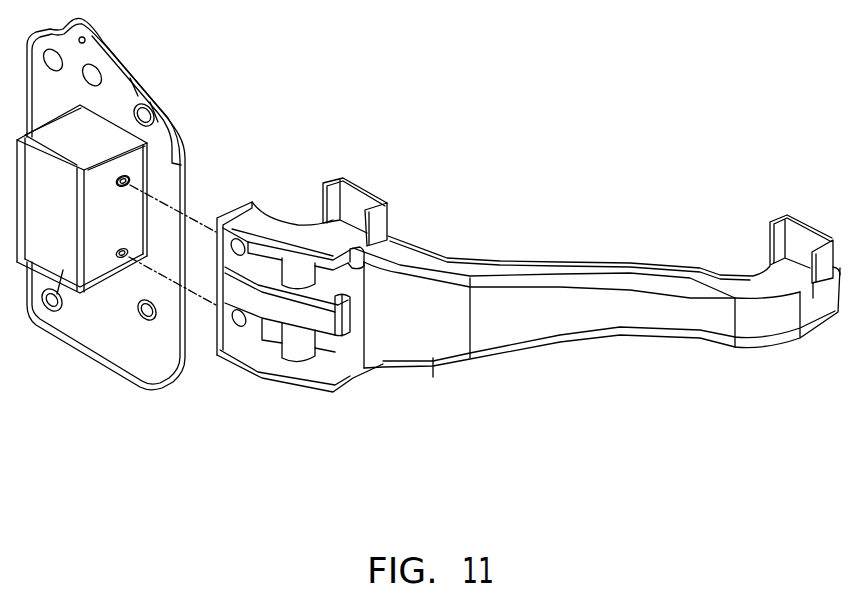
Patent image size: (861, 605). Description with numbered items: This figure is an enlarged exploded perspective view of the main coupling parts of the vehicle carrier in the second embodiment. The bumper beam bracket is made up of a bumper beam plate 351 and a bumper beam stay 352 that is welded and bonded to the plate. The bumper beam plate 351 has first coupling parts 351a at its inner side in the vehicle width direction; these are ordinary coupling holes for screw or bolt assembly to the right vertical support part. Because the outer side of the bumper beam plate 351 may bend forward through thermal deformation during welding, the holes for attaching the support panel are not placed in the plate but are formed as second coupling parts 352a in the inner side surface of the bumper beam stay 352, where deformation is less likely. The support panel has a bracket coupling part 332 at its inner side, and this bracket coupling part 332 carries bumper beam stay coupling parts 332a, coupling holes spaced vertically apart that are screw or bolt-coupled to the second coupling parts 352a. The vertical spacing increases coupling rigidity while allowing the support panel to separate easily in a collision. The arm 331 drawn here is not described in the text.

The lever arm 331 is at (436, 370).
The bracket coupling part 332 is at (316, 392).
The bumper beam stay coupling part 332a is at (270, 212).
The bumper beam plate 351 is at (122, 343).
The first coupling part 351a is at (153, 95).
The bumper beam stay 352 is at (52, 332).
The second coupling part 352a is at (132, 176).